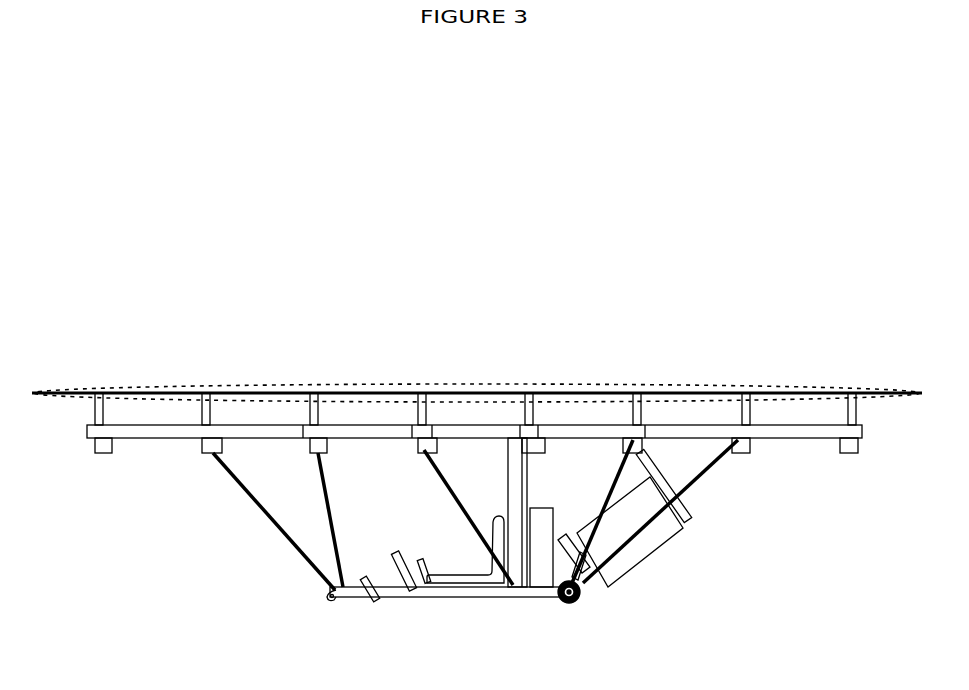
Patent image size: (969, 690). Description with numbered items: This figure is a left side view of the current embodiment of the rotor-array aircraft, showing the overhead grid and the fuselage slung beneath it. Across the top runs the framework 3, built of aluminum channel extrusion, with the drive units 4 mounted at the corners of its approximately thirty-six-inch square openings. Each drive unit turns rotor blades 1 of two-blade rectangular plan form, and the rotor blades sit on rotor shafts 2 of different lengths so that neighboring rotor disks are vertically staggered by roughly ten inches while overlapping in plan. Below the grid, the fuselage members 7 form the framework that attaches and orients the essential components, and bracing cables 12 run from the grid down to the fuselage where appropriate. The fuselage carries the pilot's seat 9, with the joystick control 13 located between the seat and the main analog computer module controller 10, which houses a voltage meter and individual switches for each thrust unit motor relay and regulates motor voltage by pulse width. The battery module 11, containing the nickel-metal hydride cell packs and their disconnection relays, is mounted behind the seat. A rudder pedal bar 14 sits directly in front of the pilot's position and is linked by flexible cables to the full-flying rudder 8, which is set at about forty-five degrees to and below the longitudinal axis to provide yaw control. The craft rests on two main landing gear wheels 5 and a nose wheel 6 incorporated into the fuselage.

The rotor blades 1 is at (170, 394).
The rotor shafts 2 is at (95, 407).
The framework 3 is at (133, 437).
The drive units 4 is at (752, 444).
The main landing gear wheels 5 is at (573, 604).
The nose wheel 6 is at (342, 598).
The fuselage members 7 is at (442, 597).
The rudder 8 is at (660, 535).
The pilot's seat 9 is at (482, 597).
The main analog computer module controller 10 is at (400, 551).
The battery module 11 is at (542, 597).
The bracing cables 12 is at (235, 475).
The joystick control 13 is at (423, 558).
The rudder pedal bar 14 is at (378, 601).